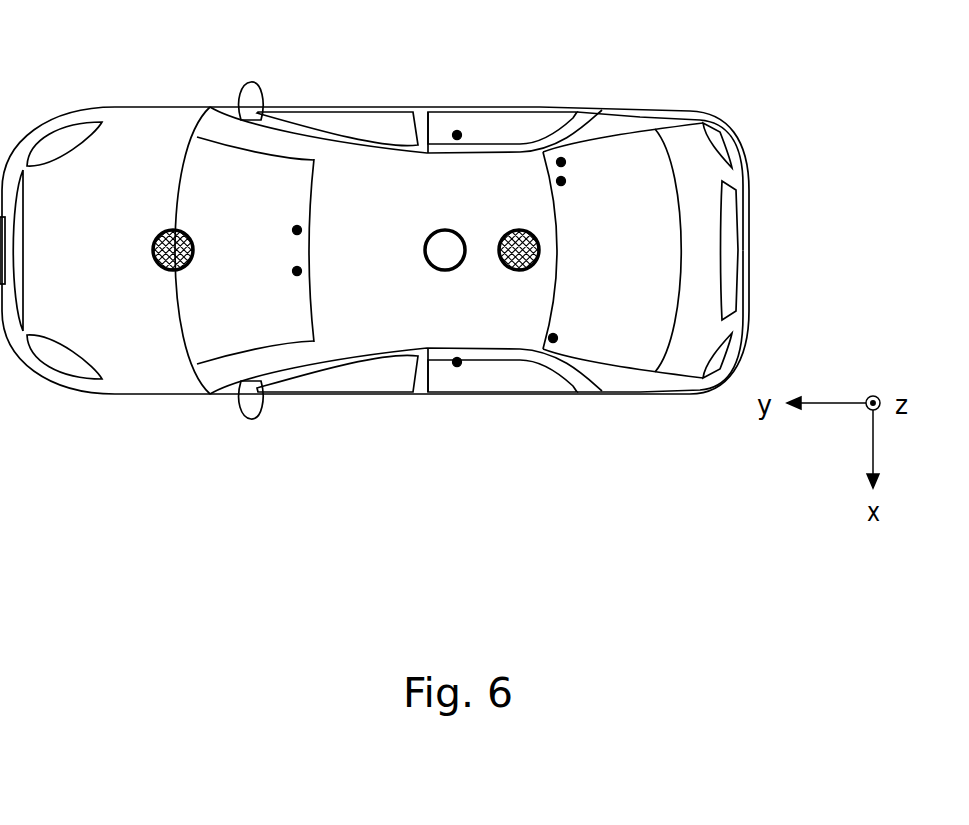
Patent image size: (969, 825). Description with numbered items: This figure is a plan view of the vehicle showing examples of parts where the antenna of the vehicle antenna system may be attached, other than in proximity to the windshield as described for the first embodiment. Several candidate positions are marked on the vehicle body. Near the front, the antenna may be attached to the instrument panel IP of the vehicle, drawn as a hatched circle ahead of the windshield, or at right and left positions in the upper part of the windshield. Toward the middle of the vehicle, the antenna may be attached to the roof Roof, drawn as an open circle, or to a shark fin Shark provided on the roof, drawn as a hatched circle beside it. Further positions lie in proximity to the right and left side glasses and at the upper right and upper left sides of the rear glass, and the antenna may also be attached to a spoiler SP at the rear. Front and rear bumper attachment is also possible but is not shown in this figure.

The instrument panel IP is at (166, 234).
The roof Roof is at (445, 234).
The shark fin Shark is at (538, 234).
The spoiler SP is at (563, 182).